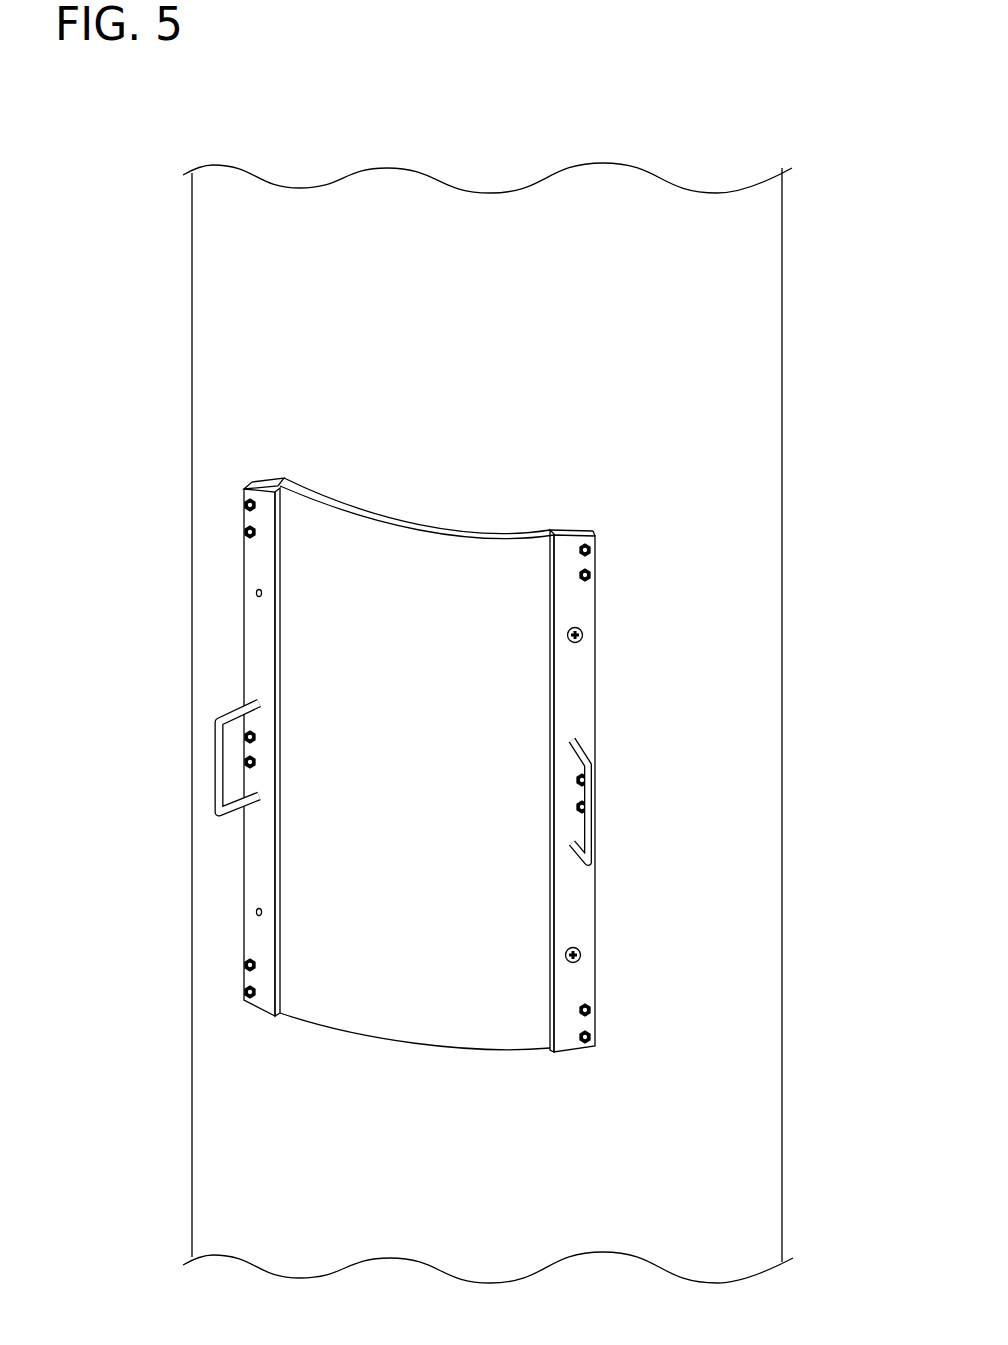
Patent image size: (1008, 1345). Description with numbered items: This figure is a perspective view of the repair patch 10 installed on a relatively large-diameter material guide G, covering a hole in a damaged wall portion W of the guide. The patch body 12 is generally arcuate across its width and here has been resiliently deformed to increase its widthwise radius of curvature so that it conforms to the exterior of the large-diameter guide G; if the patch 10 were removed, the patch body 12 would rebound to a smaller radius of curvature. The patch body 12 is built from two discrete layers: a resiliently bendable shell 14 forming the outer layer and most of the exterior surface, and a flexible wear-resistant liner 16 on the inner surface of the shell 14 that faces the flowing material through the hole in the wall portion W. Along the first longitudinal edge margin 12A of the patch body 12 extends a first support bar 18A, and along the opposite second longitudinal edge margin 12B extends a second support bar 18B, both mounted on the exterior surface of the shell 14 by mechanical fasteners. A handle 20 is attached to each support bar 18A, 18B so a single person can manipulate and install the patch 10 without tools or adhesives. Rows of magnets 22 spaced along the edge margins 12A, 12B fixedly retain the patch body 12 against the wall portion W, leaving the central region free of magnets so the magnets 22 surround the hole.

The patch 10 is at (685, 1063).
The patch body 12 is at (437, 742).
The first longitudinal edge margin 12A is at (597, 675).
The second longitudinal edge margin 12B is at (244, 618).
The shell 14 is at (302, 528).
The liner 16 is at (360, 520).
The first support bar 18A is at (571, 912).
The second support bar 18B is at (250, 881).
The handle 20 is at (223, 765).
The magnet 22 is at (578, 530).
The wall portion W is at (750, 772).
The material guide G is at (796, 995).